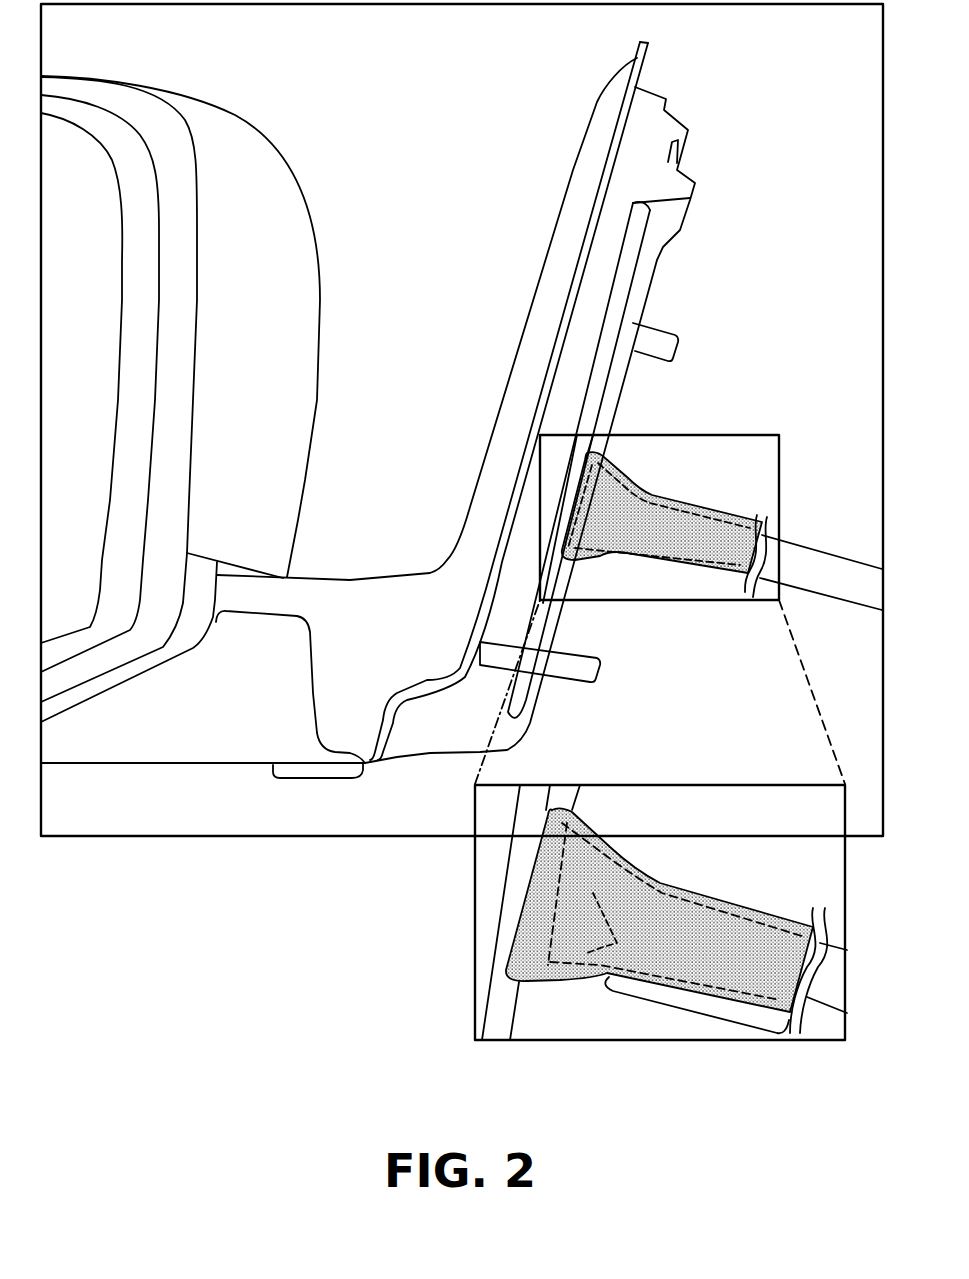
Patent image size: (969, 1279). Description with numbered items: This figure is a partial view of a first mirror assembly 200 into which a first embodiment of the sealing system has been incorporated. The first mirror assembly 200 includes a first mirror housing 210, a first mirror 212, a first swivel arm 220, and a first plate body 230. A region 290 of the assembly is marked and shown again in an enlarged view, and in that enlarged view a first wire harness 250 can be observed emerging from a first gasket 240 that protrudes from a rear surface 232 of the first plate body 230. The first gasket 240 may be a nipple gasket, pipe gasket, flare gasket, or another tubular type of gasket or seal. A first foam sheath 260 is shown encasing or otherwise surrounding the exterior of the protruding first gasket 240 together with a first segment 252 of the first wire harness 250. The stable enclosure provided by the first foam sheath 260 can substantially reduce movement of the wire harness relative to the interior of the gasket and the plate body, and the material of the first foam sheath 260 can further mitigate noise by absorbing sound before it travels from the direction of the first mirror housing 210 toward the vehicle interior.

The first mirror assembly 200 is at (270, 104).
The first mirror housing 210 is at (290, 225).
The first mirror 212 is at (68, 160).
The first swivel arm 220 is at (210, 737).
The first plate body 230 is at (722, 145).
The rear surface 232 is at (510, 996).
The first gasket 240 is at (552, 980).
The first wire harness 250 is at (827, 993).
The first segment 252 is at (697, 1013).
The first foam sheath 260 is at (693, 890).
The region 290 is at (717, 435).